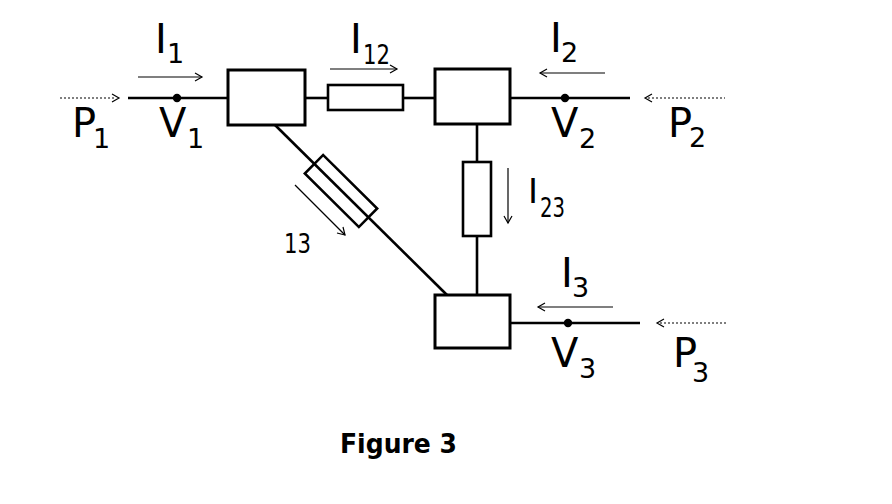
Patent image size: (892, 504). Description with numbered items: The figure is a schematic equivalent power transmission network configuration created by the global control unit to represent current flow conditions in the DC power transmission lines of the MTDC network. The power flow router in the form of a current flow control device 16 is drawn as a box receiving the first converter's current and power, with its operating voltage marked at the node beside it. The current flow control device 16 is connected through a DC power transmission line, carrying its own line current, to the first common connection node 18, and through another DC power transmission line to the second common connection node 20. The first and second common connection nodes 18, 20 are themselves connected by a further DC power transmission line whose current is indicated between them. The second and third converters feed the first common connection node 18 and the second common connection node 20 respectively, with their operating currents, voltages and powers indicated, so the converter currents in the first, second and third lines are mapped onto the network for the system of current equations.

The current flow control (CFC) device 16 is at (266, 97).
The first common connection node 18 is at (472, 96).
The second common connection node 20 is at (472, 321).